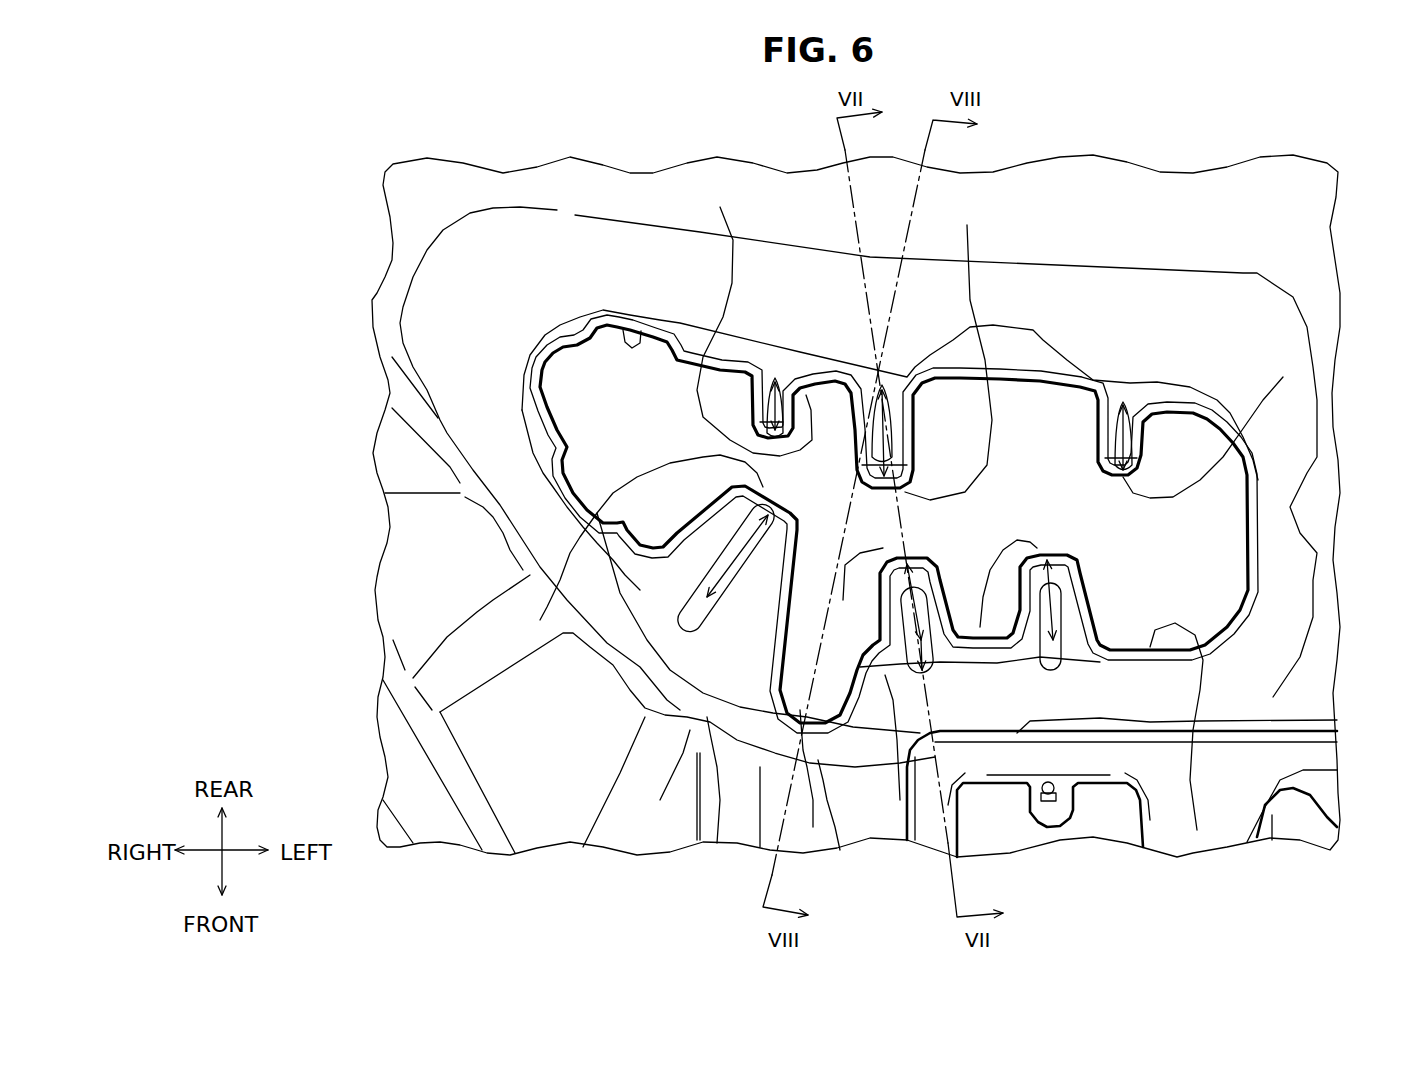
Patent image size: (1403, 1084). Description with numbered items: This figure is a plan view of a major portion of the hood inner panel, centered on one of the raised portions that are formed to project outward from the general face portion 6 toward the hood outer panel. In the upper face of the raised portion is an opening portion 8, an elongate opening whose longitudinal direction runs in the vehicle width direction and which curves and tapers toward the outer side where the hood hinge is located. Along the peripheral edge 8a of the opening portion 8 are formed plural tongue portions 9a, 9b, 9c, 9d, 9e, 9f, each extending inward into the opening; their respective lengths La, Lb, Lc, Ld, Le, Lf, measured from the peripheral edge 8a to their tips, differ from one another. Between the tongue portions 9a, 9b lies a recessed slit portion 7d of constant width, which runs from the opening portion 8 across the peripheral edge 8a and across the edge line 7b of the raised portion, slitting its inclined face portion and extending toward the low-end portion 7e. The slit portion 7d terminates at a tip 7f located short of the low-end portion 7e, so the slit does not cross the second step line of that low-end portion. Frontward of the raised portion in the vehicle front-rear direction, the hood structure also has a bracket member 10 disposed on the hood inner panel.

The general face portion 6 is at (1197, 237).
The opening portion 8 is at (617, 313).
The peripheral edge 8a is at (1197, 830).
The bracket member 10 is at (1293, 752).
The tongue portion 9a is at (556, 605).
The tongue portion 9b is at (857, 670).
The tongue portion 9c is at (985, 623).
The tongue portion 9d is at (1283, 377).
The tongue portion 9e is at (967, 225).
The tongue portion 9f is at (720, 207).
The edge line 7b is at (900, 800).
The slit portion 7d is at (717, 843).
The low-end portion 7e is at (813, 827).
The tip 7f is at (840, 850).
The length of tongue portion La is at (652, 568).
The length of tongue portion Lb is at (922, 610).
The length of tongue portion Lc is at (1053, 613).
The length of tongue portion Ld is at (1107, 430).
The length of tongue portion Le is at (913, 425).
The length of tongue portion Lf is at (792, 402).